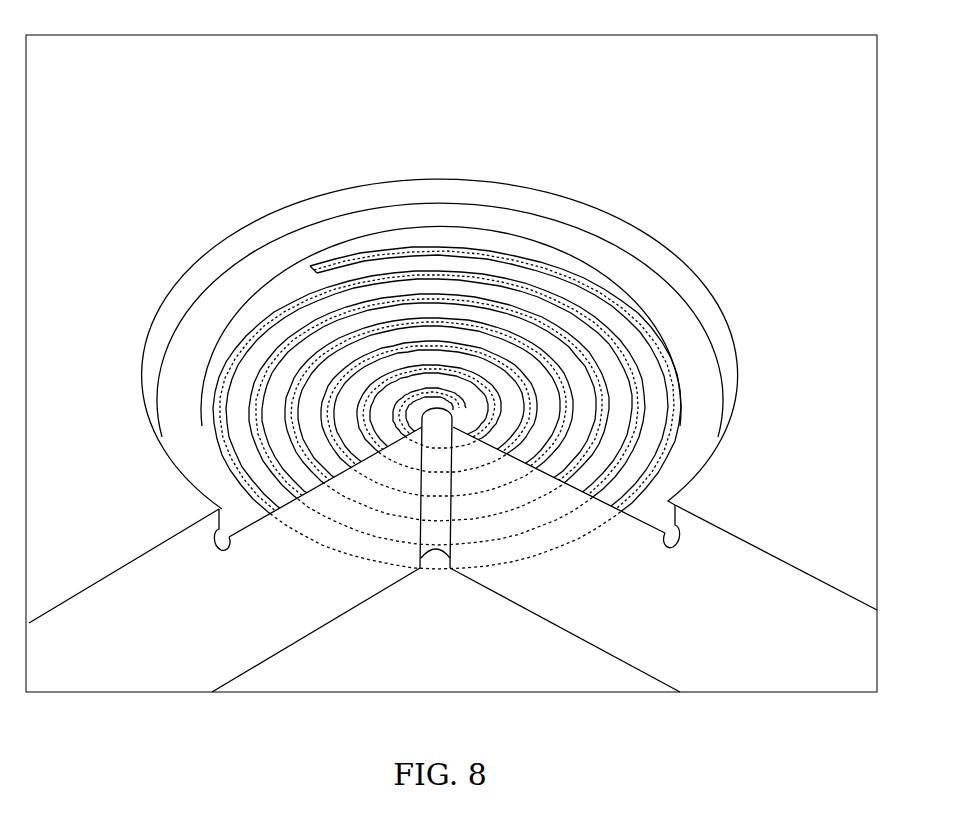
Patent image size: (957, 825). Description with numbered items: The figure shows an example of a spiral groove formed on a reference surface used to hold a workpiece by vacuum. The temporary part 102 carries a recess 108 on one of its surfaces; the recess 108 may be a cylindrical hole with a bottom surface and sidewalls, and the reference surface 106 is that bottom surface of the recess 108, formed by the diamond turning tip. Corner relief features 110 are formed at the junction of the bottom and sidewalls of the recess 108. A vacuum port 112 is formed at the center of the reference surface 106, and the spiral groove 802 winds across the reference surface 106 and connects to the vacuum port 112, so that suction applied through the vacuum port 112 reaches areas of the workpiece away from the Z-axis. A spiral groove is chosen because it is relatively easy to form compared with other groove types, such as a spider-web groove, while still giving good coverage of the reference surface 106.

The temporary part 102 is at (449, 355).
The reference surface 106 is at (667, 492).
The recess 108 is at (668, 353).
The corner relief features 110 is at (670, 545).
The vacuum port 112 is at (430, 427).
The spiral groove 802 is at (377, 257).